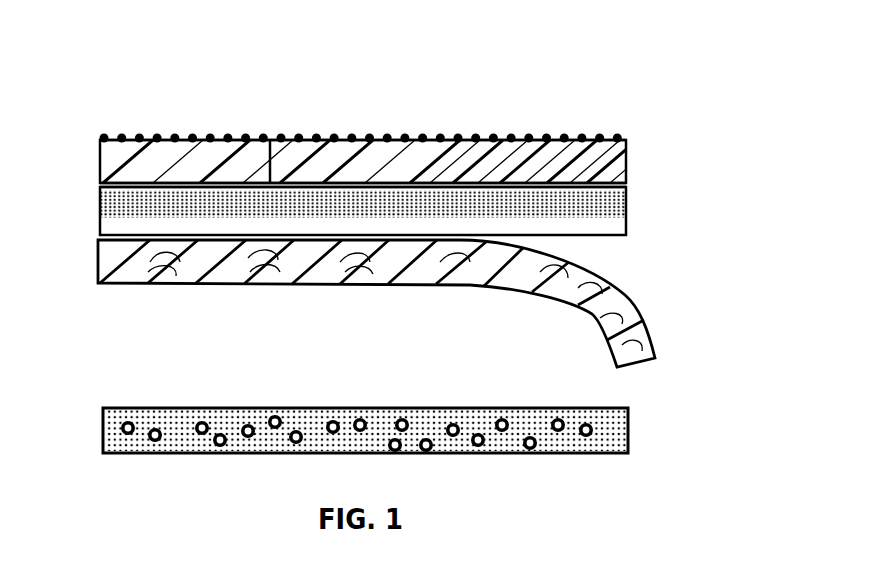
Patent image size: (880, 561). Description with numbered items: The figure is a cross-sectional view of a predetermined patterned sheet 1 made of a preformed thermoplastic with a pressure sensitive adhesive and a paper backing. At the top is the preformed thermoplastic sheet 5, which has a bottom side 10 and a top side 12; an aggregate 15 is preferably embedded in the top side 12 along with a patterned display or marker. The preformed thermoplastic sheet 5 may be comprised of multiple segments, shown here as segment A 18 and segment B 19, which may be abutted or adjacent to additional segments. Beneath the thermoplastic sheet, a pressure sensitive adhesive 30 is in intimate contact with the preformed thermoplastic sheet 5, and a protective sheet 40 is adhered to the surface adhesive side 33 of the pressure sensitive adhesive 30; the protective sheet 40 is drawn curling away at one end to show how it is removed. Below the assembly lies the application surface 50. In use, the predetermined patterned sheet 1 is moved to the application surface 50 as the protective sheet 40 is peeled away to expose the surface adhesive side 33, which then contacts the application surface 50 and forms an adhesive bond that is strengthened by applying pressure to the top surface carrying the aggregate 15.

The predetermined patterned sheet 1 is at (80, 225).
The preformed thermoplastic sheet 5 is at (436, 101).
The bottom side 10 is at (628, 182).
The top side 12 is at (112, 138).
The aggregate 15 is at (540, 138).
The segment A 18 is at (388, 173).
The segment B 19 is at (184, 165).
The pressure sensitive adhesive 30 is at (613, 215).
The surface adhesive side 33 is at (627, 237).
The protective sheet 40 is at (635, 317).
The application surface 50 is at (628, 432).